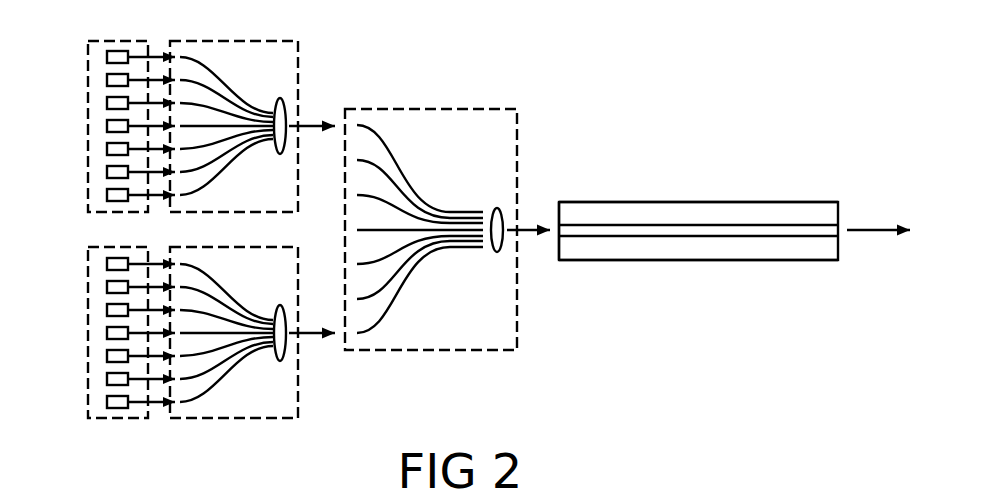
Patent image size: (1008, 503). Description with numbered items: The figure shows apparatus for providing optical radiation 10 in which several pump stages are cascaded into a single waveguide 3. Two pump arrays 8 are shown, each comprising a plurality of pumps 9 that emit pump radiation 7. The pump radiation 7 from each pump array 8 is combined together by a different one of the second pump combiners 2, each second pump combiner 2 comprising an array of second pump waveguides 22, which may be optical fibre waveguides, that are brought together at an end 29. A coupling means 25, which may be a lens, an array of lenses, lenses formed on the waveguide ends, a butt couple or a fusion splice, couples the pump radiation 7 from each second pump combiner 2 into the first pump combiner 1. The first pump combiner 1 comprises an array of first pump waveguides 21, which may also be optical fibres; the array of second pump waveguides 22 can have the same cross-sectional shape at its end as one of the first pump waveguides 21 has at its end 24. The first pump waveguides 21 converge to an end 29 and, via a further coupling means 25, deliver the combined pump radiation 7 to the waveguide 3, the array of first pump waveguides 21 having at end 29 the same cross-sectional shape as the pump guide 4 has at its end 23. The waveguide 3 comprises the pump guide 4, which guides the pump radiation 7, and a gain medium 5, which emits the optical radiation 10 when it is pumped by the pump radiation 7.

The first pump combiner 1 is at (442, 109).
The second pump combiner 2 is at (233, 40).
The waveguide 3 is at (722, 260).
The pump guide 4 is at (600, 202).
The gain medium 5 is at (752, 225).
The pump radiation 7 is at (153, 56).
The pump array 8 is at (100, 41).
The pump 9 is at (105, 58).
The optical radiation 10 is at (875, 227).
The first pump waveguide 21 is at (385, 172).
The second pump waveguide 22 is at (230, 87).
The end of pump guide 23 is at (559, 202).
The end of first pump waveguide 24 is at (357, 126).
The coupling means 25 is at (284, 133).
The end of pump waveguide array 29 is at (276, 108).